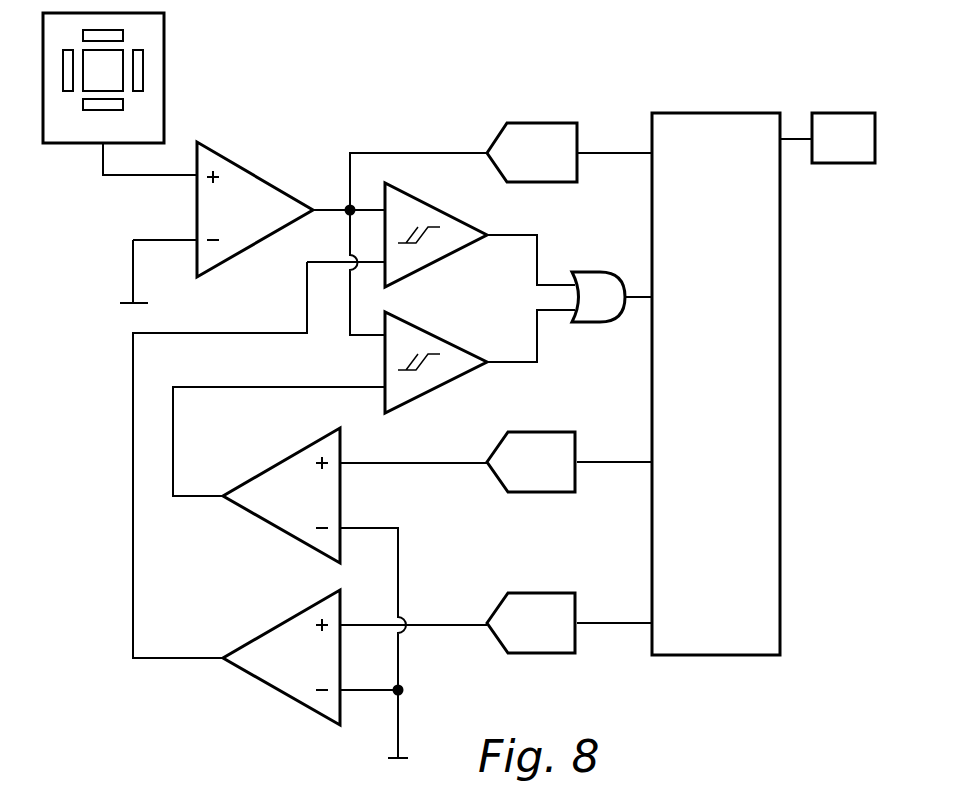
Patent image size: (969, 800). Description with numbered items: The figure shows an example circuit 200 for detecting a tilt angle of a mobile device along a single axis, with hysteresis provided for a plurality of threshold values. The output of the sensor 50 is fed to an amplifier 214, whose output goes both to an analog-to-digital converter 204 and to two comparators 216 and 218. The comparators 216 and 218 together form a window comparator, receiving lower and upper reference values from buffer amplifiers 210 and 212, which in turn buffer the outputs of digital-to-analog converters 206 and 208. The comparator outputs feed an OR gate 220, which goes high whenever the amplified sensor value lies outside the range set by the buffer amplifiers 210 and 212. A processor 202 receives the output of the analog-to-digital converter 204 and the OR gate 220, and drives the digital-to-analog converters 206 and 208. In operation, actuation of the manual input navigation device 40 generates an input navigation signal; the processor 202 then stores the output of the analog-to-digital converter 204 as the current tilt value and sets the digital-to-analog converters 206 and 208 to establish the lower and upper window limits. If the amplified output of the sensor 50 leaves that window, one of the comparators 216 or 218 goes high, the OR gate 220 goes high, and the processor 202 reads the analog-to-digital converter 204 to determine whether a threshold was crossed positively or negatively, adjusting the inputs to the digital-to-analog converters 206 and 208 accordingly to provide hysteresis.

The manual input navigation device 40 is at (833, 113).
The sensor 50 is at (164, 68).
The circuit 200 is at (506, 84).
The processor 202 is at (708, 655).
The analog-to-digital converter 204 is at (533, 182).
The digital-to-analog converter 206 is at (547, 593).
The digital-to-analog converter 208 is at (532, 492).
The buffer amplifier 210 is at (287, 621).
The buffer amplifier 212 is at (287, 459).
The amplifier 214 is at (265, 180).
The comparator 216 is at (438, 210).
The comparator 218 is at (448, 340).
The OR gate 220 is at (593, 323).